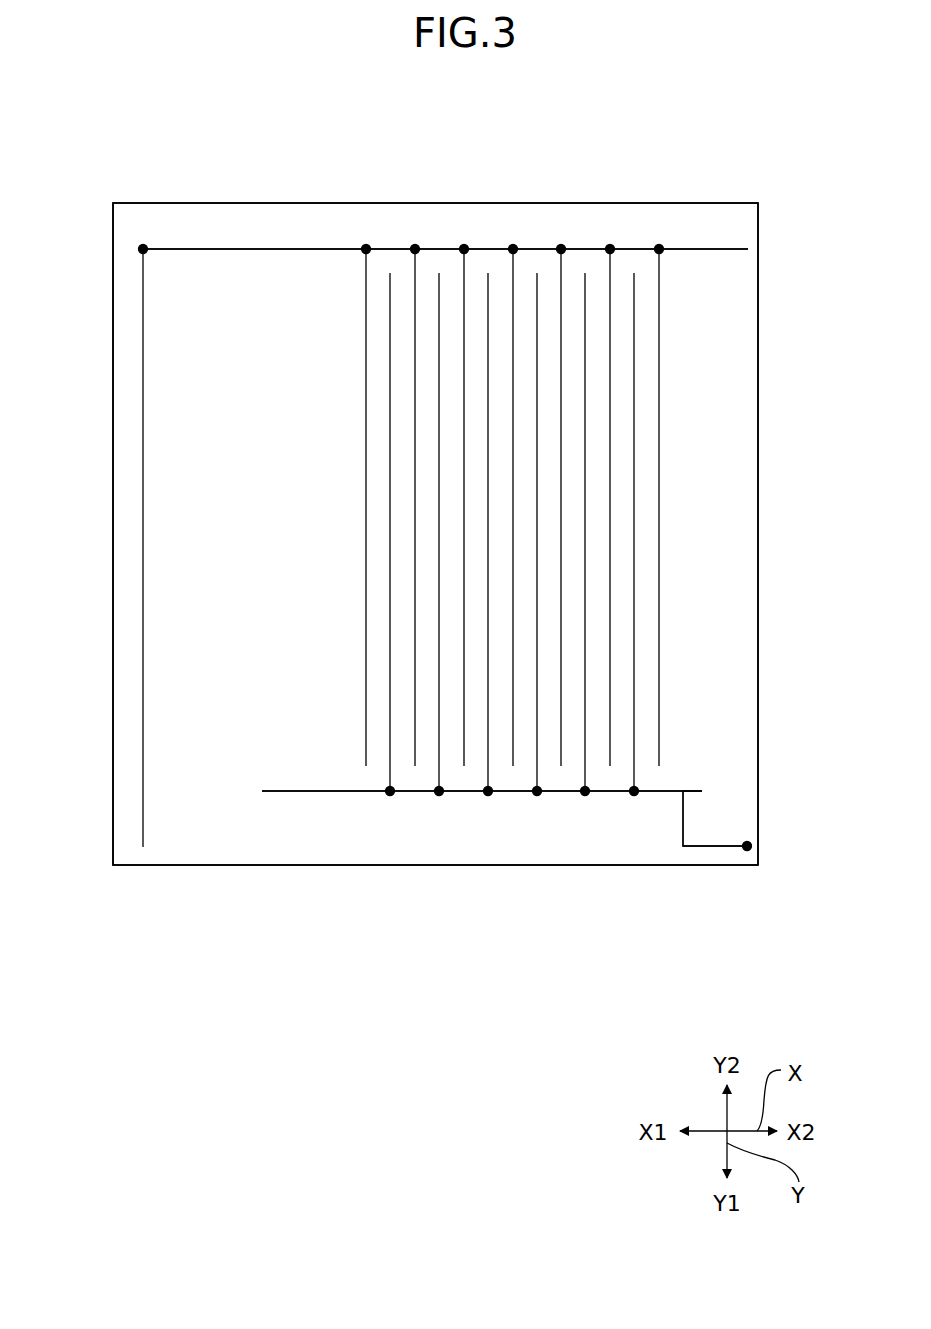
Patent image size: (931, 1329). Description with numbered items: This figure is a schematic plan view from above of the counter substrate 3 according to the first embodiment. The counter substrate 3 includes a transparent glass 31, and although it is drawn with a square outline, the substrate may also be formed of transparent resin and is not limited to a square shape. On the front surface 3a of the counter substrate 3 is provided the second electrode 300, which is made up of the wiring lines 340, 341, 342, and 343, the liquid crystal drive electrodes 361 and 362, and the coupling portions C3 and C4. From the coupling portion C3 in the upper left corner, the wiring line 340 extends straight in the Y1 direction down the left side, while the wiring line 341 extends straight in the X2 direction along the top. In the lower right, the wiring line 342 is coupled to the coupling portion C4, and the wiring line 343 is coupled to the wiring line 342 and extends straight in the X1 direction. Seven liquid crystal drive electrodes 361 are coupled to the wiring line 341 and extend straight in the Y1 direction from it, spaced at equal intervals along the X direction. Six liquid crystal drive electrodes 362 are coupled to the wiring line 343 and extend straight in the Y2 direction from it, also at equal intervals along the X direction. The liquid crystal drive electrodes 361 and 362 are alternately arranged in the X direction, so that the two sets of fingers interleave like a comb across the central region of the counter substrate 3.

The counter substrate 3 is at (640, 145).
The front surface of the counter substrate 3a is at (435, 534).
The transparent glass 31 is at (243, 232).
The second electrode 300 is at (338, 247).
The wiring line 340 is at (143, 648).
The wiring line 341 is at (310, 248).
The wiring line 342 is at (683, 825).
The wiring line 343 is at (453, 793).
The liquid crystal drive electrodes 361 is at (367, 273).
The liquid crystal drive electrodes 362 is at (390, 727).
The coupling portion C3 is at (141, 246).
The coupling portion C4 is at (747, 850).